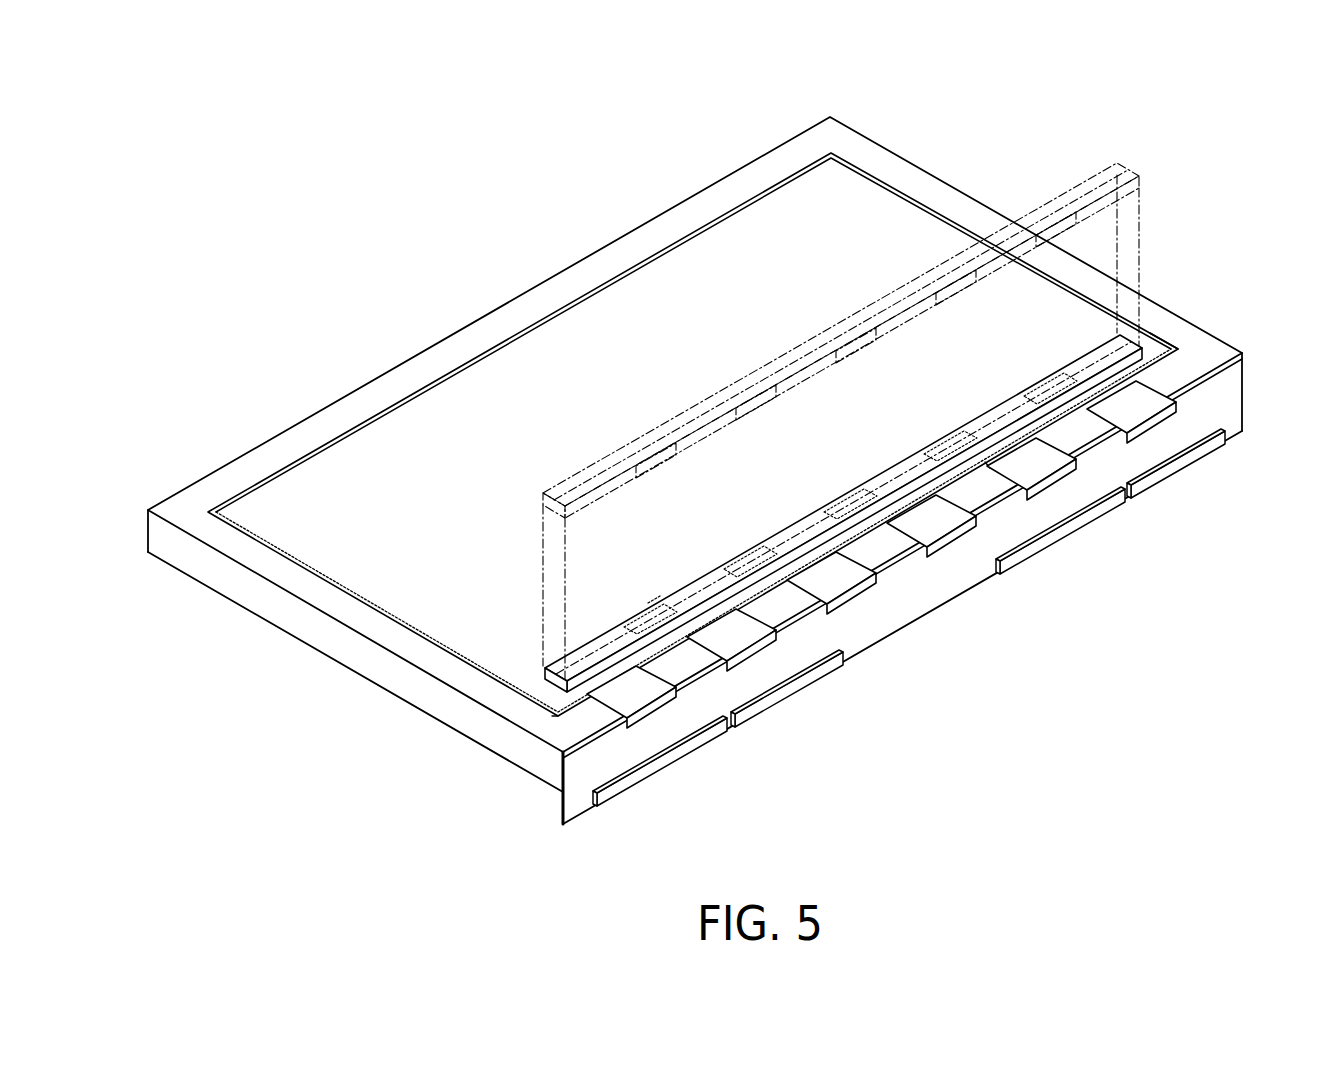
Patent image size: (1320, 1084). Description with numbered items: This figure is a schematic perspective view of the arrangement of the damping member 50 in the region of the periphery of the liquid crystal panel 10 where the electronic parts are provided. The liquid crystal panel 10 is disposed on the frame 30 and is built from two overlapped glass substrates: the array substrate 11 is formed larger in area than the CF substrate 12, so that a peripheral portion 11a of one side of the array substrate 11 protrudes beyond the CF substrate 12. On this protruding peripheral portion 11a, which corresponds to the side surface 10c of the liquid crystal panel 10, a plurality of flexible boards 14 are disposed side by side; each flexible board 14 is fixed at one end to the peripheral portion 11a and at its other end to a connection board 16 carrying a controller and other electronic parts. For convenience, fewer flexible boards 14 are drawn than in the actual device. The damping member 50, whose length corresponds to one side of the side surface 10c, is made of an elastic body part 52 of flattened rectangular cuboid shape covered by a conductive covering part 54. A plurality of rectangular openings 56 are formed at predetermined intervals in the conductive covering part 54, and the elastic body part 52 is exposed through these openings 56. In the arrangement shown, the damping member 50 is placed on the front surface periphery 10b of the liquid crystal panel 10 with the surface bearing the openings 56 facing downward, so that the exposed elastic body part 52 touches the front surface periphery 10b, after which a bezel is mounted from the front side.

The liquid crystal panel 10 is at (848, 208).
The front surface periphery 10b is at (525, 697).
The side surface of the liquid crystal panel 10c is at (548, 747).
The array substrate 11 is at (337, 590).
The peripheral portion 11a is at (1174, 349).
The CF substrate 12 is at (430, 622).
The flexible board 14 is at (753, 637).
The connection board 16 is at (905, 608).
The frame 30 is at (176, 504).
The damping member 50 is at (988, 398).
The elastic body part 52 is at (822, 512).
The conductive covering part 54 is at (890, 458).
The opening 56 is at (650, 603).